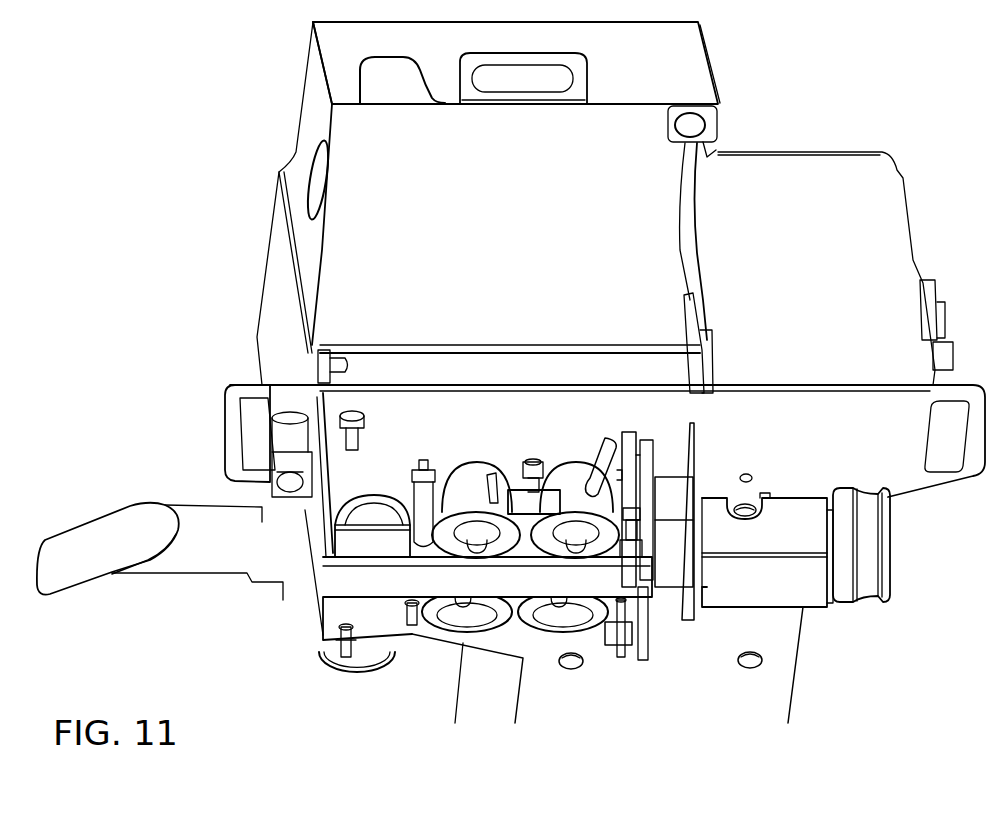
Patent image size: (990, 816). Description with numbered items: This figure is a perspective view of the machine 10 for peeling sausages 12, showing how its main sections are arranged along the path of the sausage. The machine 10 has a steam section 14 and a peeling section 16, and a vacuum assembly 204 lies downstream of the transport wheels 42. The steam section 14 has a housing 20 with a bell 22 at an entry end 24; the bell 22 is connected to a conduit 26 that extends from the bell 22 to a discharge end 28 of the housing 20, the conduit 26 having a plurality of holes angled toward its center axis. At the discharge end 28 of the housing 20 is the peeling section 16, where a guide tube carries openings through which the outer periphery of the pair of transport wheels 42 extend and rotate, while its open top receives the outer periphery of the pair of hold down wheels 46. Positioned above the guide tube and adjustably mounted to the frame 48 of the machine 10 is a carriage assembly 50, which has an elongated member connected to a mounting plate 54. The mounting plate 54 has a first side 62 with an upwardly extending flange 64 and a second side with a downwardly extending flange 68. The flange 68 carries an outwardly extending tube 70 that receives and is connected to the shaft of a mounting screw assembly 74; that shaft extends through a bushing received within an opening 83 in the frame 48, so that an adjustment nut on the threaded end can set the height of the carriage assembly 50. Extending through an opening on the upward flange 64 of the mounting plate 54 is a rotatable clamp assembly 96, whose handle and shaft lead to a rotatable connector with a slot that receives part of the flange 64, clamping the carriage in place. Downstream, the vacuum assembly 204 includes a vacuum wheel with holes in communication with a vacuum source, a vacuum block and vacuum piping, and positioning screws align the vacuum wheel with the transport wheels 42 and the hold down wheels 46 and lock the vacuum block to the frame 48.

The machine 10 is at (848, 138).
The sausages 12 is at (818, 627).
The steam section 14 is at (438, 647).
The peeling section 16 is at (310, 640).
The housing 20 is at (870, 528).
The bell 22 is at (890, 522).
The entry end 24 is at (890, 567).
The conduit 26 is at (750, 597).
The discharge end 28 is at (656, 550).
The transport wheels 42 is at (535, 640).
The hold down wheels 46 is at (467, 478).
The frame 48 is at (697, 455).
The carriage assembly 50 is at (523, 479).
The mounting plate 54 is at (693, 446).
The first side 62 is at (648, 408).
The upwardly extending flange 64 is at (653, 467).
The downwardly extending flange 68 is at (622, 645).
The tube 70 is at (612, 635).
The mounting screw assembly 74 is at (643, 622).
The opening 83 is at (617, 655).
The rotatable clamp assembly 96 is at (634, 433).
The vacuum assembly 204 is at (310, 673).